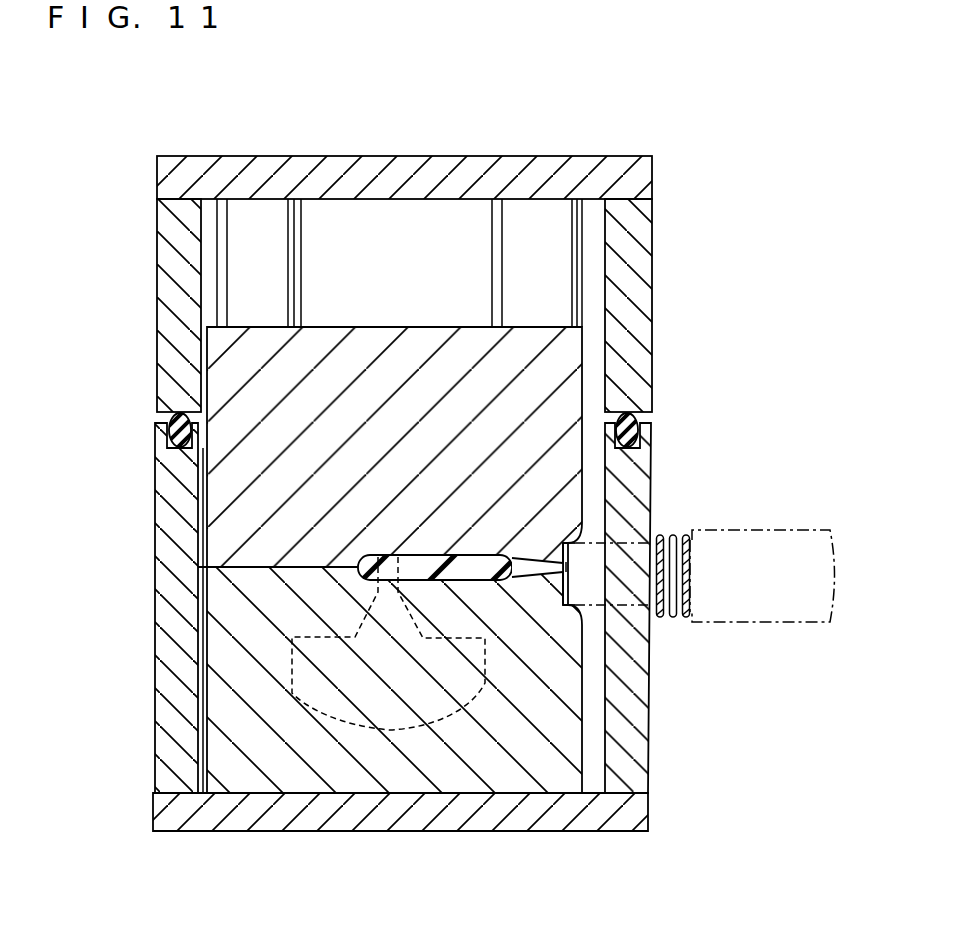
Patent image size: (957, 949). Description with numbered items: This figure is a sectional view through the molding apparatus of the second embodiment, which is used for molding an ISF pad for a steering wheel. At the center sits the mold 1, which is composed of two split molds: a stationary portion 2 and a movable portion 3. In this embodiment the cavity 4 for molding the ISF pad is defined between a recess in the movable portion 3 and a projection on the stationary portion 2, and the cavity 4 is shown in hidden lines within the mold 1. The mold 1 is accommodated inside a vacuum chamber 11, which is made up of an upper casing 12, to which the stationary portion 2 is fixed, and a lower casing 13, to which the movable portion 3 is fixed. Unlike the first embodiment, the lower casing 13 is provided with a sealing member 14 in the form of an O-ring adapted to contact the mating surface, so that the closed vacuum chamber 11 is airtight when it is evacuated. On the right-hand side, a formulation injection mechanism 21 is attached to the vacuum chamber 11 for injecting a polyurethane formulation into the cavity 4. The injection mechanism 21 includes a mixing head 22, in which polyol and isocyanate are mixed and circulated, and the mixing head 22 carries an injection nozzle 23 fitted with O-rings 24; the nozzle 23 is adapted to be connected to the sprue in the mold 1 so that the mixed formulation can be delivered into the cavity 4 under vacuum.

The mold 1 is at (315, 616).
The stationary portion 2 is at (230, 518).
The movable portion 3 is at (230, 623).
The cavity 4 is at (388, 730).
The vacuum chamber 11 is at (443, 453).
The upper casing 12 is at (643, 265).
The lower casing 13 is at (637, 742).
The sealing member 14 is at (632, 426).
The formulation injection mechanism 21 is at (701, 582).
The mixing head 22 is at (787, 529).
The injection nozzle 23 is at (650, 628).
The O-rings 24 is at (685, 535).